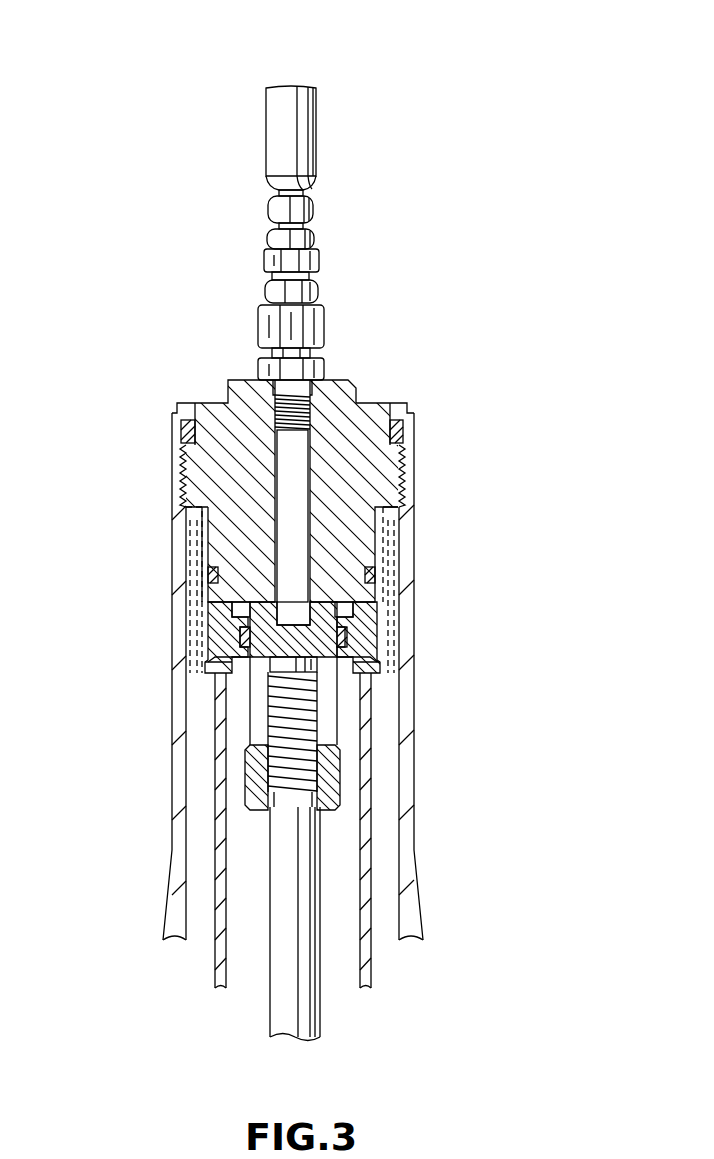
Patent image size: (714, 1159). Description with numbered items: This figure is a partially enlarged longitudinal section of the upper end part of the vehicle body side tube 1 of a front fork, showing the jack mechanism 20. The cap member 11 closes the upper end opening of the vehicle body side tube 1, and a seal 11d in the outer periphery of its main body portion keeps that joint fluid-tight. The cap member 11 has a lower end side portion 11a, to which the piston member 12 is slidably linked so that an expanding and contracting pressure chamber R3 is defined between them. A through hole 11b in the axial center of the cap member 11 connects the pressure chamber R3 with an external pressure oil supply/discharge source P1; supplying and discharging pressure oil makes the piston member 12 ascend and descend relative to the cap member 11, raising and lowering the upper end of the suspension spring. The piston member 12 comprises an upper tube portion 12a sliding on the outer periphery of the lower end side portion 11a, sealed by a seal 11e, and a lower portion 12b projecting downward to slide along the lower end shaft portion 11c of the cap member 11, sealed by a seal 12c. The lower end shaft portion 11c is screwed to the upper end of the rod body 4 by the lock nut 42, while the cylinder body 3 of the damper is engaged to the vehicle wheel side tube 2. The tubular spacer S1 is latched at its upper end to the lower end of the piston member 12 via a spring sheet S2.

The pressure oil supply/discharge source P1 is at (291, 85).
The jack mechanism 20 is at (425, 292).
The cap member 11 is at (371, 398).
The piston member 12 is at (392, 518).
The upper tube portion 12a is at (200, 527).
The lower end side portion 11a is at (383, 543).
The vehicle wheel side tube 2 is at (393, 586).
The seal 11d is at (181, 433).
The through hole 11b is at (290, 497).
The seal 11e is at (208, 575).
The pressure chamber R3 is at (232, 608).
The lower portion 12b is at (348, 637).
The seal 12c is at (356, 664).
The spring sheet S2 is at (213, 674).
The lower end shaft portion 11c is at (320, 712).
The lock nut 42 is at (340, 776).
The rod body 4 is at (322, 1015).
The cylinder body 3 is at (372, 965).
The vehicle body side tube 1 is at (410, 920).
The spacer S1 is at (220, 828).